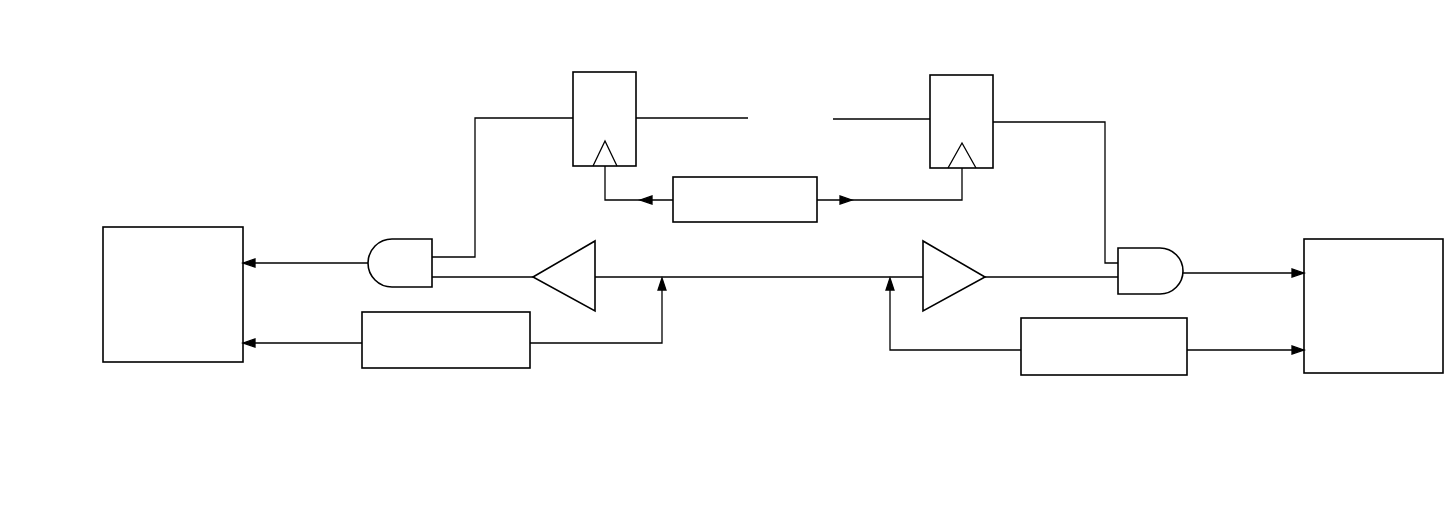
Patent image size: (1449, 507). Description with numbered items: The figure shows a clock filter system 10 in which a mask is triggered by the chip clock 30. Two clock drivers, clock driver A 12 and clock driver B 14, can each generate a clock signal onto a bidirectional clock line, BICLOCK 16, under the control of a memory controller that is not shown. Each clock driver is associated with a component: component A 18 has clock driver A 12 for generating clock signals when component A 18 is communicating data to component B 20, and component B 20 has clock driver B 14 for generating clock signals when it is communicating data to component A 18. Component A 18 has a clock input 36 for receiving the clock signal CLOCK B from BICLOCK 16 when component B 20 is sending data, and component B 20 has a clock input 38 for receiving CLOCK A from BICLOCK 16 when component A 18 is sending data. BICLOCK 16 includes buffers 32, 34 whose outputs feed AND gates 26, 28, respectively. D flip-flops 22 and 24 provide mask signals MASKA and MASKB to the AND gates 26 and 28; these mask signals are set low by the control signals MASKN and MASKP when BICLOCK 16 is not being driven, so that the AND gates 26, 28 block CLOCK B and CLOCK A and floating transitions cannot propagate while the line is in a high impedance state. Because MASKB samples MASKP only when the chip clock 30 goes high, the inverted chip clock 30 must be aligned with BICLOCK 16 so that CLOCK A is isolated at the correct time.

The clock filter system 10 is at (755, 50).
The clock driver A 12 is at (420, 368).
The clock driver B 14 is at (1130, 375).
The bidirectional clock line (BICLOCK) 16 is at (792, 280).
The component A 18 is at (112, 227).
The component B 20 is at (1433, 239).
The D flip-flop 22 is at (605, 72).
The D flip-flop 24 is at (962, 75).
The AND gate 26 is at (413, 239).
The AND gate 28 is at (1138, 248).
The chip clock 30 is at (758, 177).
The buffer 32 is at (572, 250).
The buffer 34 is at (965, 265).
The clock input 36 is at (253, 263).
The clock input 38 is at (1297, 272).